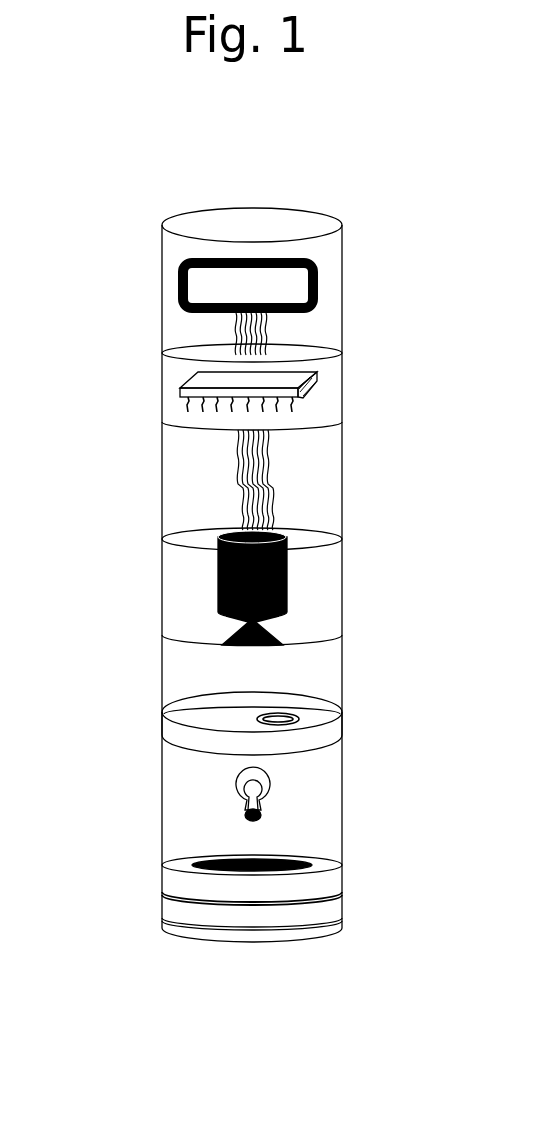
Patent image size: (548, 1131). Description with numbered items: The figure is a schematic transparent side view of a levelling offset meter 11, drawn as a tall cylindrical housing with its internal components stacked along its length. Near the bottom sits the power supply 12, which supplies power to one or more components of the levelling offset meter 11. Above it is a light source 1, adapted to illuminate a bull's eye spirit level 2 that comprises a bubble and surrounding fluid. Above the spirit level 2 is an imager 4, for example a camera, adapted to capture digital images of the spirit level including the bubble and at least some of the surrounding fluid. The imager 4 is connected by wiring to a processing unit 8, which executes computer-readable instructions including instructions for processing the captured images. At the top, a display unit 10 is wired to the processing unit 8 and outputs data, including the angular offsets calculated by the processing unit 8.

The levelling offset meter 11 is at (202, 225).
The display unit 10 is at (320, 278).
The processing unit 8 is at (313, 393).
The imager 4 is at (287, 595).
The bull's eye spirit level 2 is at (311, 721).
The light source 1 is at (238, 800).
The power supply 12 is at (162, 878).